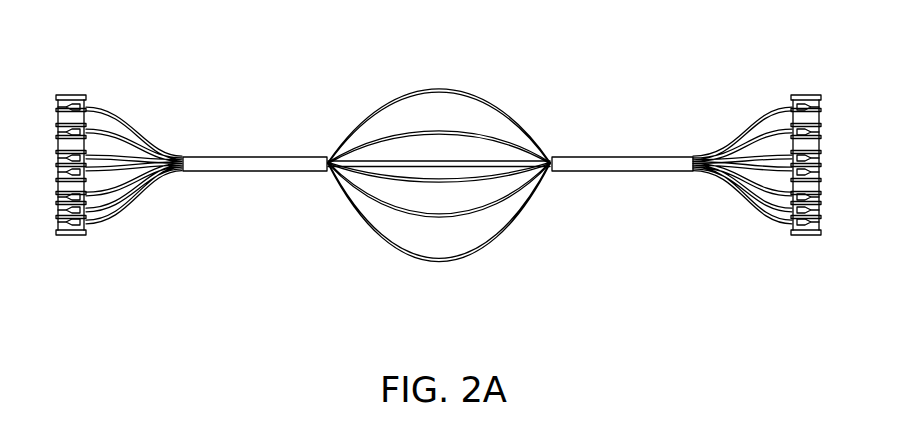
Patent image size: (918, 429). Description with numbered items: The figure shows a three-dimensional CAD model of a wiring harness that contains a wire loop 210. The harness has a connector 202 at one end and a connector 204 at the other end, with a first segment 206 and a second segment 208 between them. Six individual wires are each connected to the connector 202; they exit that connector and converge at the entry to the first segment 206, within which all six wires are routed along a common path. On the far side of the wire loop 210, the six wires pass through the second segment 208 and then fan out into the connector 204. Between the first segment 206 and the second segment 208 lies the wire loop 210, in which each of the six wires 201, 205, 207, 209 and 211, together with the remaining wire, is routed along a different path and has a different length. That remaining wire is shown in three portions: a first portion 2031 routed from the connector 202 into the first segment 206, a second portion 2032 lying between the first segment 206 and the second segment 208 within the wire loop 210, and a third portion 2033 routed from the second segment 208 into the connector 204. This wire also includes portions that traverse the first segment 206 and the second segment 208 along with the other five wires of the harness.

The wire 201 is at (412, 161).
The connector 202 is at (72, 92).
The first portion of wire 203 2031 is at (124, 127).
The second portion of wire 203 2032 is at (467, 251).
The third portion of wire 203 2033 is at (763, 205).
The connector 204 is at (806, 93).
The wire 205 is at (407, 184).
The first segment 206 is at (217, 175).
The wire 207 is at (408, 130).
The second segment 208 is at (588, 174).
The wire 209 is at (407, 218).
The wire loop 210 is at (340, 108).
The wire 211 is at (442, 86).